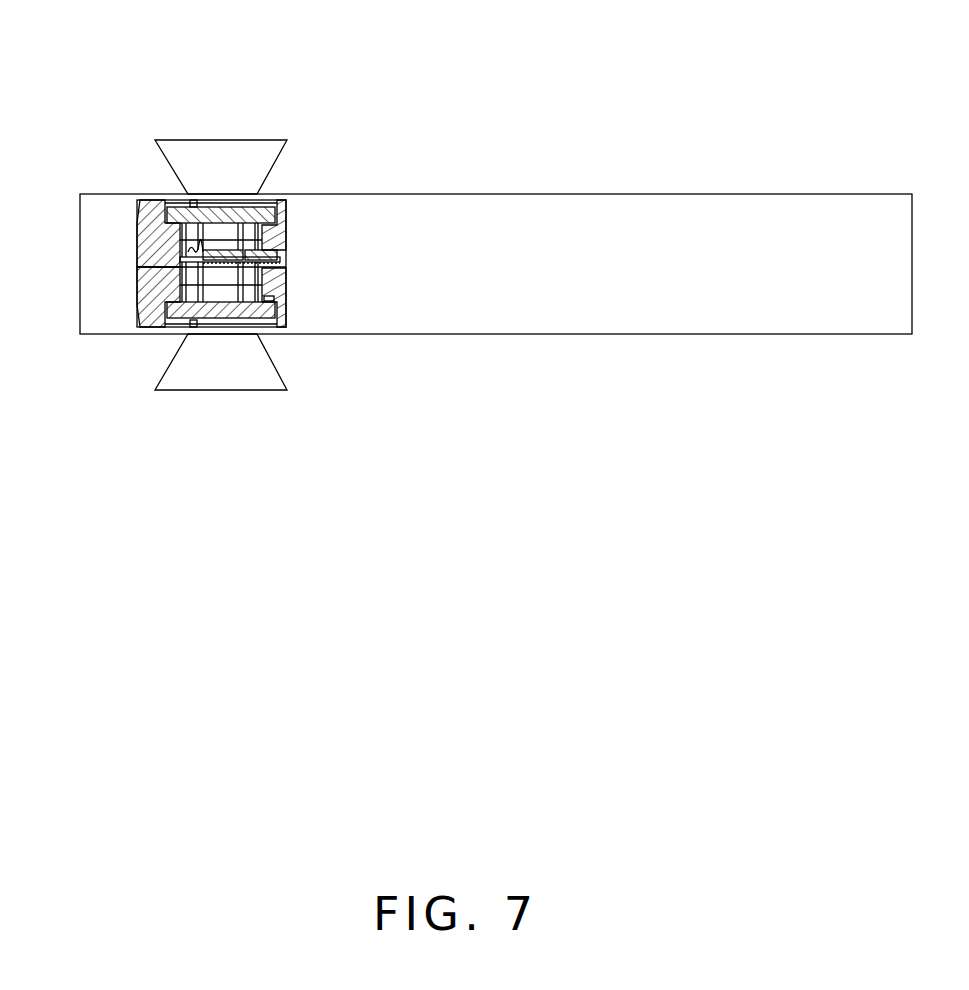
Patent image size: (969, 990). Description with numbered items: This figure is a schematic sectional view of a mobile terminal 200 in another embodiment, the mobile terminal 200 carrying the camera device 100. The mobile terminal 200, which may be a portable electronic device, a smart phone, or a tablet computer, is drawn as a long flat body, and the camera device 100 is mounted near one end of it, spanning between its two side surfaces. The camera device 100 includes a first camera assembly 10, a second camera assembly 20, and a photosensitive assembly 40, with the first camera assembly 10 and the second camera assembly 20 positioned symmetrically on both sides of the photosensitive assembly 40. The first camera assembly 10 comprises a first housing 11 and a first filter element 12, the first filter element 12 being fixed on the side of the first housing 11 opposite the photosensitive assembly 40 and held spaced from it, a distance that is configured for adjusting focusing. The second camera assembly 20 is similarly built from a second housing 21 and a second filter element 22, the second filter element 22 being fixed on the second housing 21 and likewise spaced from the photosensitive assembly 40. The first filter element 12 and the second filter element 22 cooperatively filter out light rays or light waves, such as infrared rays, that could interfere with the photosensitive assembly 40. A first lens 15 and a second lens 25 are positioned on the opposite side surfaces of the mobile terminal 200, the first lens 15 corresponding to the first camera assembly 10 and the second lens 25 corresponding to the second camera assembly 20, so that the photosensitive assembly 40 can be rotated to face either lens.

The camera device 100 is at (239, 262).
The mobile terminal 200 is at (798, 215).
The first lens 15 is at (210, 157).
The second lens 25 is at (223, 377).
The first camera assembly 10 is at (279, 170).
The first filter element 12 is at (265, 212).
The first housing 11 is at (285, 233).
The second camera assembly 20 is at (292, 351).
The second filter element 22 is at (258, 310).
The second housing 21 is at (287, 283).
The photosensitive assembly 40 is at (287, 257).